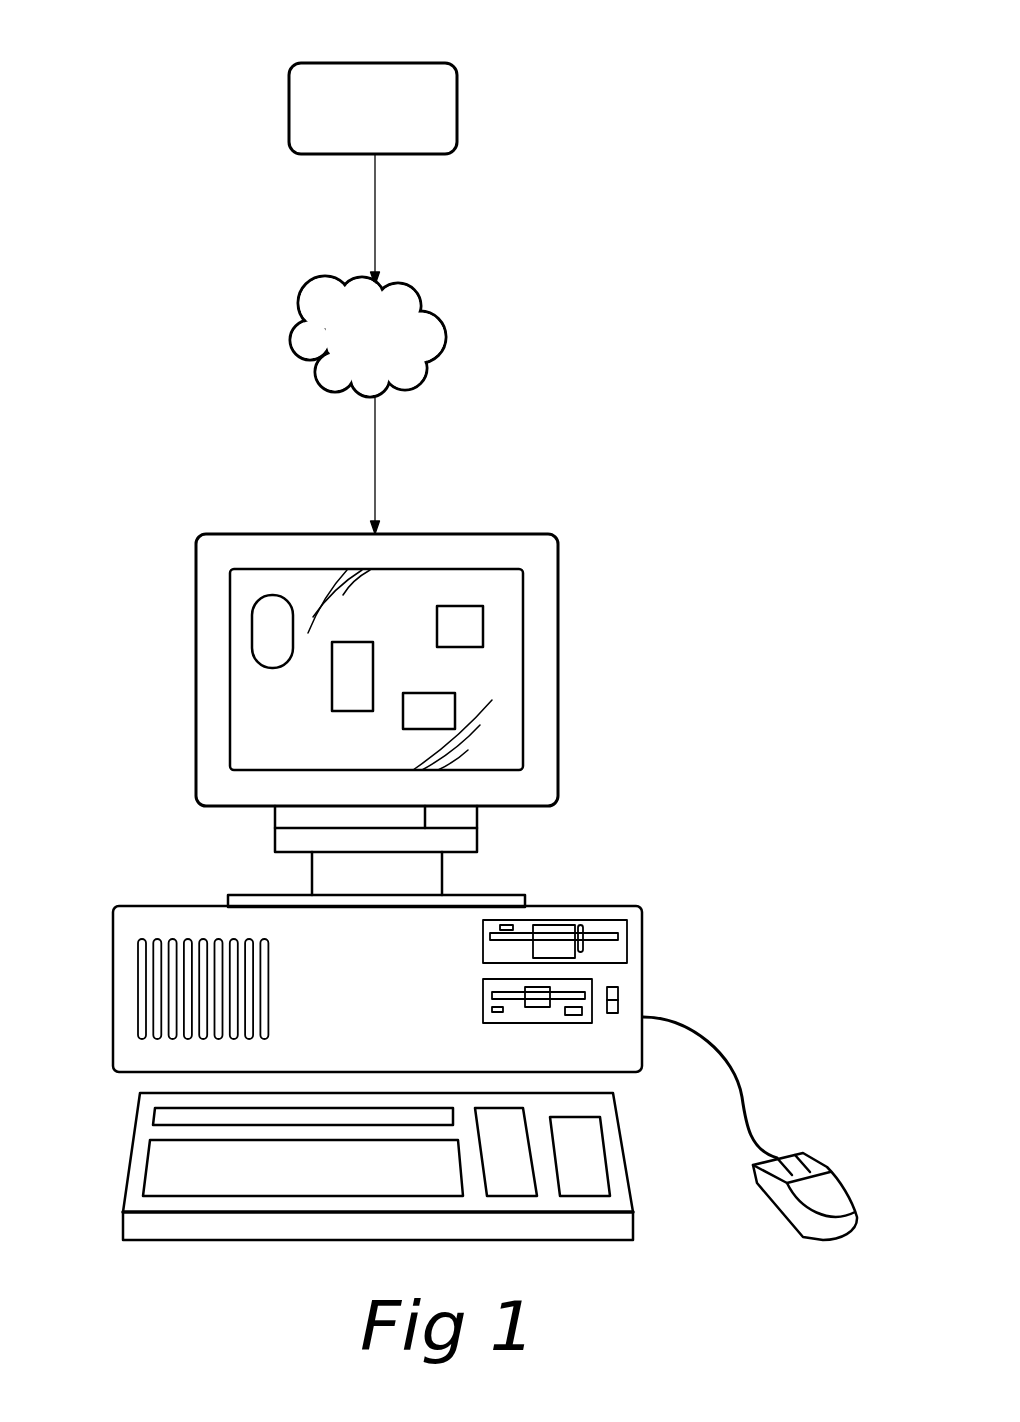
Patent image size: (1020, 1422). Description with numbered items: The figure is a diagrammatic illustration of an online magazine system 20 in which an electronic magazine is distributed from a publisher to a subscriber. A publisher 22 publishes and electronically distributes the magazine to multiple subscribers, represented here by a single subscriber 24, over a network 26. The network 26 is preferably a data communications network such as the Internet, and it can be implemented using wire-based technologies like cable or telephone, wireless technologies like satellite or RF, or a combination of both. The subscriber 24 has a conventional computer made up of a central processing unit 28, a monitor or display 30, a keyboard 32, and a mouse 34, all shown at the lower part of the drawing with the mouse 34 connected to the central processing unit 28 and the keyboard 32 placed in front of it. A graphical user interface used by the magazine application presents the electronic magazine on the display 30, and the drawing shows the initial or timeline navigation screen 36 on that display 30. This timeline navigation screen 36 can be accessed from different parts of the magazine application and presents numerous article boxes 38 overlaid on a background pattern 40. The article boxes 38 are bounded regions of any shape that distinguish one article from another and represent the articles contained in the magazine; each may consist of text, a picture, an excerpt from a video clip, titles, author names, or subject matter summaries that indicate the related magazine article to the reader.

The online magazine system 20 is at (592, 186).
The publisher 22 is at (382, 62).
The subscriber 24 is at (635, 737).
The network 26 is at (447, 332).
The central processing unit 28 is at (645, 967).
The monitor or display 30 is at (545, 667).
The keyboard 32 is at (125, 1172).
The mouse 34 is at (838, 1188).
The timeline navigation screen 36 is at (408, 592).
The article boxes 38 is at (270, 622).
The background pattern 40 is at (268, 728).